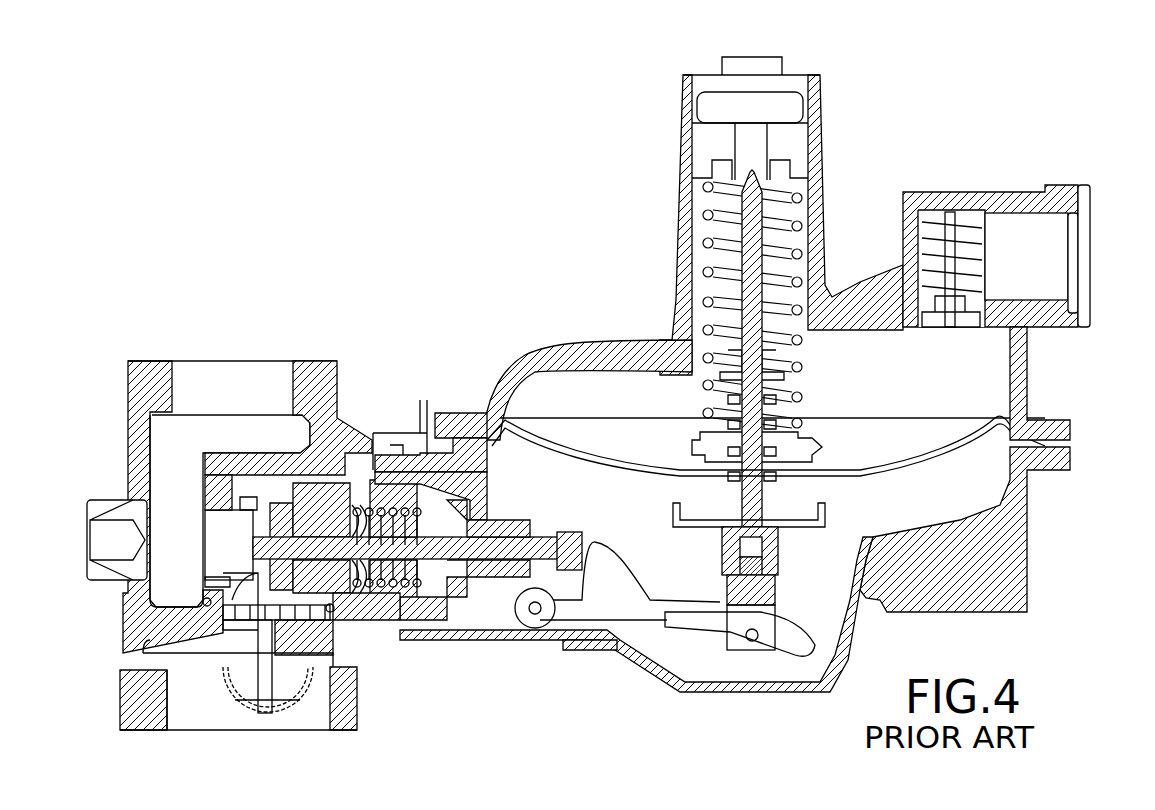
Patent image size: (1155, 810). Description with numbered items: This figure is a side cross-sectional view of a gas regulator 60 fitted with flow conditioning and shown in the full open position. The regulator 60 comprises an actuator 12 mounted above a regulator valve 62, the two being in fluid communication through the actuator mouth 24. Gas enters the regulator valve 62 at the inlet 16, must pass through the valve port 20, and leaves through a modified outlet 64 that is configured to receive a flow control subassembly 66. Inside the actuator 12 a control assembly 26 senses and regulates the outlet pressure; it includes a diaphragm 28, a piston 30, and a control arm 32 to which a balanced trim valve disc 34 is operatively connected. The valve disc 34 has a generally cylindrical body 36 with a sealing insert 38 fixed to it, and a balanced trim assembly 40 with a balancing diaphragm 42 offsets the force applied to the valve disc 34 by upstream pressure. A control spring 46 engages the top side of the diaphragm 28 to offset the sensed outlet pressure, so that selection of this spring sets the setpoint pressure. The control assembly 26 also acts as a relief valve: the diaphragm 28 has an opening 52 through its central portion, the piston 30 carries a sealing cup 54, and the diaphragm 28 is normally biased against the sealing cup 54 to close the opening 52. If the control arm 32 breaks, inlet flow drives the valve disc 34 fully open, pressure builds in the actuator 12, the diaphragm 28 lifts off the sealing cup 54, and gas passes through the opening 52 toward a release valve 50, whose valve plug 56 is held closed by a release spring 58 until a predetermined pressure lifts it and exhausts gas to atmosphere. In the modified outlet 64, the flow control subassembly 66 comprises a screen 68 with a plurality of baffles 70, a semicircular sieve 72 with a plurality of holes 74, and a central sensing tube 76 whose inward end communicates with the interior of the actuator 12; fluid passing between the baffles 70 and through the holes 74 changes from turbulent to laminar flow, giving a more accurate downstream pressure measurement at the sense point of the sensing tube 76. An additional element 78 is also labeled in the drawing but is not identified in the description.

The actuator 12 is at (828, 128).
The inlet 16 is at (172, 392).
The valve port 20 is at (230, 545).
The actuator mouth 24 is at (478, 640).
The control assembly 26 is at (830, 530).
The diaphragm 28 is at (1010, 433).
The piston 30 is at (740, 292).
The control arm 32 is at (668, 610).
The valve disc 34 is at (285, 500).
The body 36 is at (300, 485).
The sealing insert 38 is at (262, 520).
The balanced trim assembly 40 is at (415, 455).
The balancing diaphragm 42 is at (365, 495).
The control spring 46 is at (707, 242).
The release valve 50 is at (965, 232).
The opening 52 is at (737, 450).
The sealing cup 54 is at (690, 532).
The valve plug 56 is at (970, 335).
The release spring 58 is at (957, 263).
The regulator 60 is at (836, 72).
The regulator valve 62 is at (338, 360).
The modified outlet 64 is at (165, 708).
The flow control subassembly 66 is at (185, 680).
The screen 68 is at (207, 608).
The baffles 70 is at (257, 600).
The semicircular sieve 72 is at (240, 698).
The holes 74 is at (305, 702).
The central sensing tube 76 is at (265, 715).
The valve shaft 78 is at (340, 612).